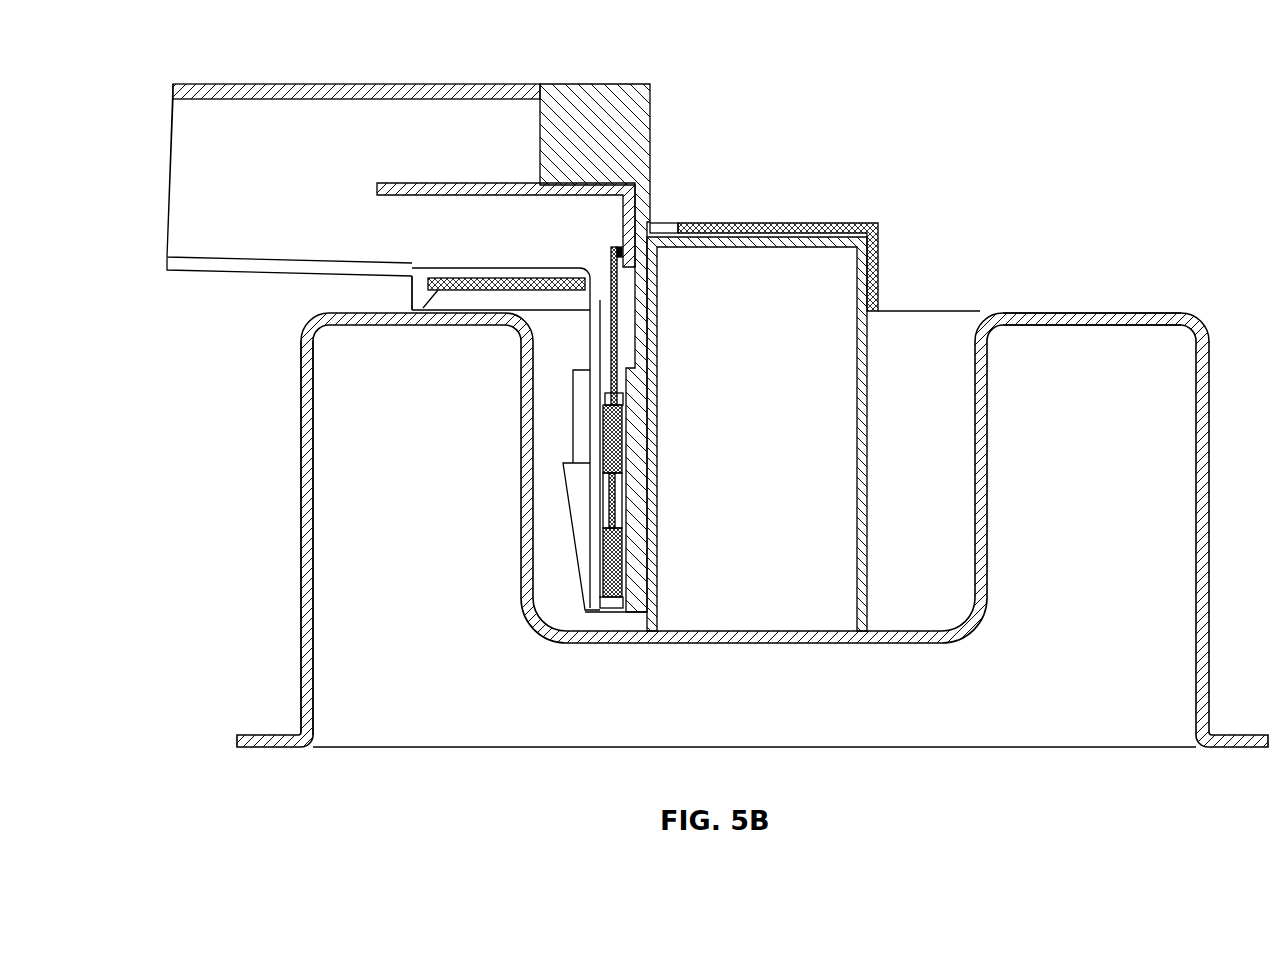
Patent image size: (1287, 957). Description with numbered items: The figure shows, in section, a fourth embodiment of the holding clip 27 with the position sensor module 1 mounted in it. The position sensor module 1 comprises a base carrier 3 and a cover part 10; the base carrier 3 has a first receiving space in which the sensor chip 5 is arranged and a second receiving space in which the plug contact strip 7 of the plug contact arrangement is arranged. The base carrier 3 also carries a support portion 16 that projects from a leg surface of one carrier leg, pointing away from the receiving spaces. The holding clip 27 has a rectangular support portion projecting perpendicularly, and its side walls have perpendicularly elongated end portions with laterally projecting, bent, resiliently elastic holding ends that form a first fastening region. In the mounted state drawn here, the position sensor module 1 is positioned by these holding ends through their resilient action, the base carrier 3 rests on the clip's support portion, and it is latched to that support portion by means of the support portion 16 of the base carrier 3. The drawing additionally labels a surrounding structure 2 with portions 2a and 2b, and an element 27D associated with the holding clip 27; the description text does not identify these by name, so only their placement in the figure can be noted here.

The position sensor module 1 is at (493, 306).
The frame / tray 2 is at (741, 479).
The first wall of frame 2a is at (300, 385).
The second wall of frame 2b is at (1109, 304).
The base carrier 3 is at (178, 135).
The sensor chip 5 is at (622, 437).
The plug contact strip 7 is at (513, 185).
The cover part 10 is at (645, 110).
The support portion 16 is at (410, 292).
The holding clip 27 is at (497, 278).
The flexible printed circuit portion 27D is at (778, 216).